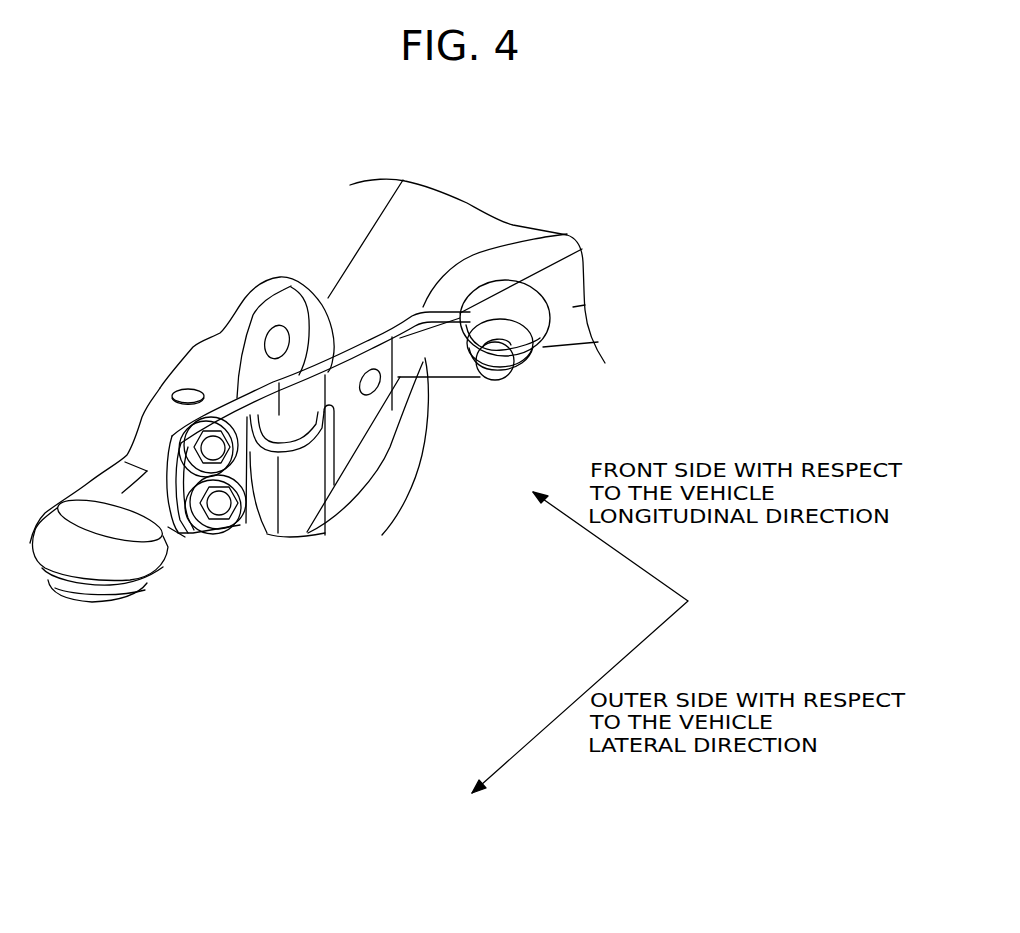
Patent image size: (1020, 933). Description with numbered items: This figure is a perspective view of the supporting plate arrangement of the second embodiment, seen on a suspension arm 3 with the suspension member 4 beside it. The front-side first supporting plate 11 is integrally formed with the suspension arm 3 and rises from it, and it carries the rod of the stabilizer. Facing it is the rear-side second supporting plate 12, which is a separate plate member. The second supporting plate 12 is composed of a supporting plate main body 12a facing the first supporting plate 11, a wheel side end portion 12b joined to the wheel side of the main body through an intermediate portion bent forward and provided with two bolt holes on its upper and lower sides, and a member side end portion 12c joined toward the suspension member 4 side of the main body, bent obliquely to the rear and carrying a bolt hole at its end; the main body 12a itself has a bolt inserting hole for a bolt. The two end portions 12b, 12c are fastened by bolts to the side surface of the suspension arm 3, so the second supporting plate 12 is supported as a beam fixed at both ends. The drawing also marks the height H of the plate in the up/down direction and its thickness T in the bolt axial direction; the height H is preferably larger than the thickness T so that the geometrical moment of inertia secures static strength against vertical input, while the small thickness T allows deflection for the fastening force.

The suspension arm 3 is at (363, 260).
The suspension member 4 is at (578, 306).
The first supporting plate 11 is at (261, 296).
The second supporting plate 12 is at (467, 510).
The supporting plate main body 12a is at (370, 410).
The wheel side end portion 12b is at (240, 462).
The member side end portion 12c is at (455, 378).
The thickness T is at (473, 318).
The height H is at (350, 366).